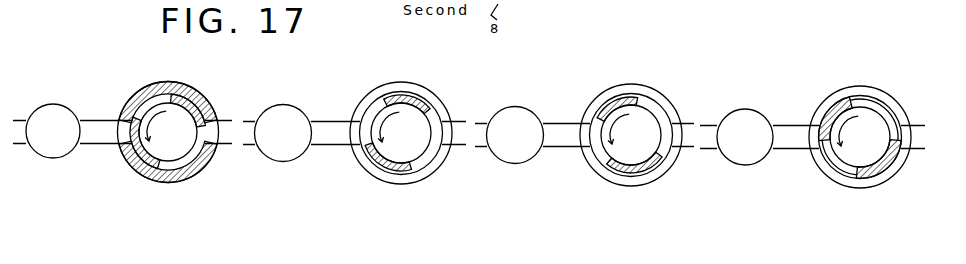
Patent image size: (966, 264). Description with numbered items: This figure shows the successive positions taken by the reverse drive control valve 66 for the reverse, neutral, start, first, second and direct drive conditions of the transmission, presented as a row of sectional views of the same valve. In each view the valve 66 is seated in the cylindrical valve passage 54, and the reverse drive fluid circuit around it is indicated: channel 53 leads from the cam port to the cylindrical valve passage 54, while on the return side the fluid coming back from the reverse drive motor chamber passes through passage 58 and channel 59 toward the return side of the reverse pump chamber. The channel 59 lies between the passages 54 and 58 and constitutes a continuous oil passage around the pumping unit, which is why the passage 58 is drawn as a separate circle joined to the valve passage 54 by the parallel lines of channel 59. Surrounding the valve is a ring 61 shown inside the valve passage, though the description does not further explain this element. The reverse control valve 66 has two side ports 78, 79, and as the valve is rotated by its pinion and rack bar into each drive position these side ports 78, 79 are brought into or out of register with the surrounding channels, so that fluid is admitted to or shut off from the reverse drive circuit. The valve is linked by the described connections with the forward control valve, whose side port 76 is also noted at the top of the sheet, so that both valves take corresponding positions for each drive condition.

The channel 53 is at (223, 137).
The cylindrical valve passage 54 is at (514, 135).
The passage 58 is at (399, 134).
The channel 59 is at (707, 88).
The intermediate ring 61 is at (128, 117).
The reverse drive control valve 66 is at (197, 90).
The side port 76 is at (663, 10).
The side port 78 is at (162, 96).
The side port 79 is at (178, 163).